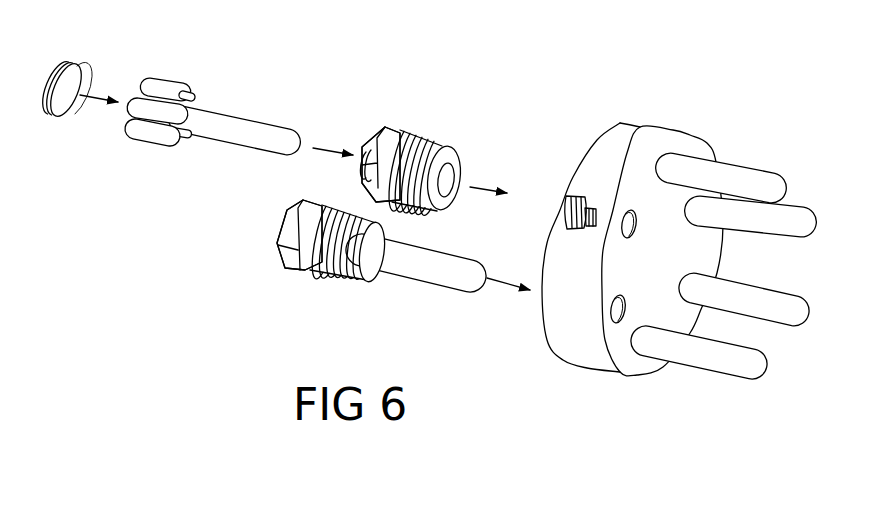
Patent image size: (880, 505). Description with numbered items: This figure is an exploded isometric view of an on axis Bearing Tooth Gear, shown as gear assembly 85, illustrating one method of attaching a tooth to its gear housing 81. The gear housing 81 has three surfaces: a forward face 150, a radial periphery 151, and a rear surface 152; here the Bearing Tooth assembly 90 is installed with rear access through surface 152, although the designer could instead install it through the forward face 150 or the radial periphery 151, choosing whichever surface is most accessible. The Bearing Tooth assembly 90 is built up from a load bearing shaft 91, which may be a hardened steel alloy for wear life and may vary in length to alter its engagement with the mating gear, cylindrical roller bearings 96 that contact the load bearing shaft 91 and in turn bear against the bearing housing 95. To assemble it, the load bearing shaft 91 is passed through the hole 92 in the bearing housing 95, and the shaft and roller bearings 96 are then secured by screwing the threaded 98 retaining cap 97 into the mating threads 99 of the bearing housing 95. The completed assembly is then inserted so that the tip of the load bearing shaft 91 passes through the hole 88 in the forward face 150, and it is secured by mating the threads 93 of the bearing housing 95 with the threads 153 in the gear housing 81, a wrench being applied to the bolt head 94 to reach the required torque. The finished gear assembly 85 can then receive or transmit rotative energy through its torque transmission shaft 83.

The gear housing 81 is at (629, 254).
The torque transmission shaft 83 is at (554, 198).
The gear assembly 85 is at (170, 318).
The hole 88 is at (620, 325).
The Bearing Tooth assembly 90 is at (393, 265).
The load bearing shaft 91 is at (222, 144).
The hole 92 is at (457, 172).
The threads 93 is at (445, 146).
The bolt head 94 is at (420, 115).
The bearing housing 95 is at (367, 140).
The cylindrical roller bearings 96 is at (182, 86).
The retaining cap 97 is at (78, 100).
The threads 98 is at (52, 110).
The mating threads 99 is at (362, 164).
The forward face 150 is at (653, 202).
The radial periphery 151 is at (642, 142).
The surface 152 is at (606, 125).
The threads 153 is at (562, 205).